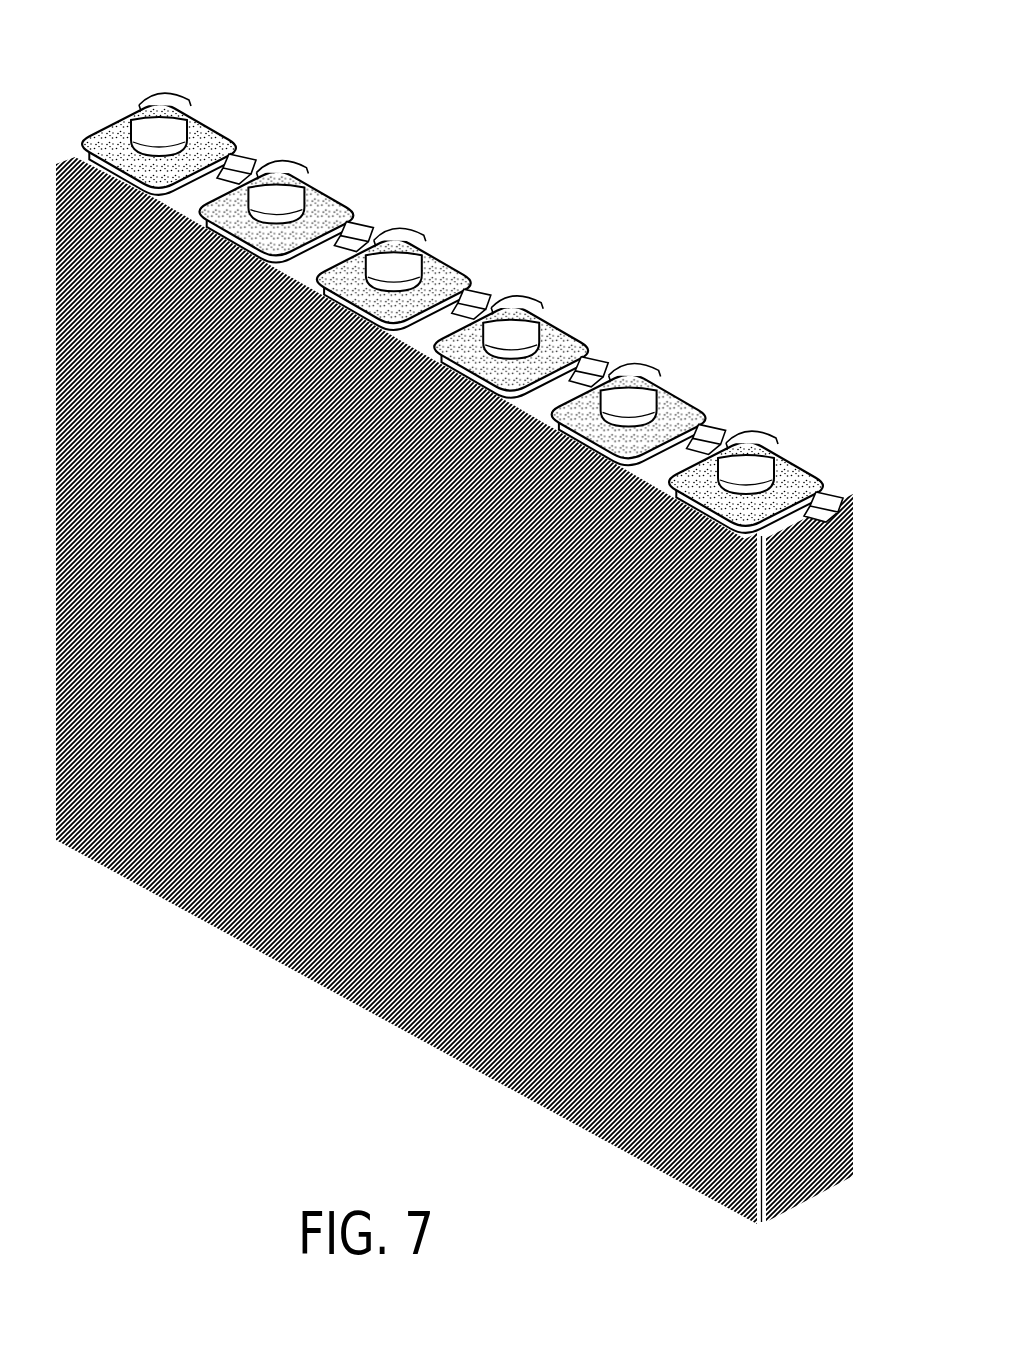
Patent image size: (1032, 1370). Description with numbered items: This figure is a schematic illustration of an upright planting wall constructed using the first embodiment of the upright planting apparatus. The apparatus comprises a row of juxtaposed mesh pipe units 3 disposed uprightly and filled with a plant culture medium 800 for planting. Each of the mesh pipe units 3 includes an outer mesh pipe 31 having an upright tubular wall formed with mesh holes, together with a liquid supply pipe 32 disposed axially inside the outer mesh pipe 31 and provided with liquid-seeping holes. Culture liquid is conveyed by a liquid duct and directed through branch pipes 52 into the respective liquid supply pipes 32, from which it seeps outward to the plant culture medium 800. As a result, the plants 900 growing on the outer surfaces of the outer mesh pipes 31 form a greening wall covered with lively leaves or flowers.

The mesh pipe unit 3 is at (462, 283).
The outer mesh pipe 31 is at (213, 113).
The liquid supply pipe 32 is at (228, 148).
The plant culture medium 800 is at (385, 228).
The branch pipe 52 is at (502, 323).
The plants 900 is at (850, 692).